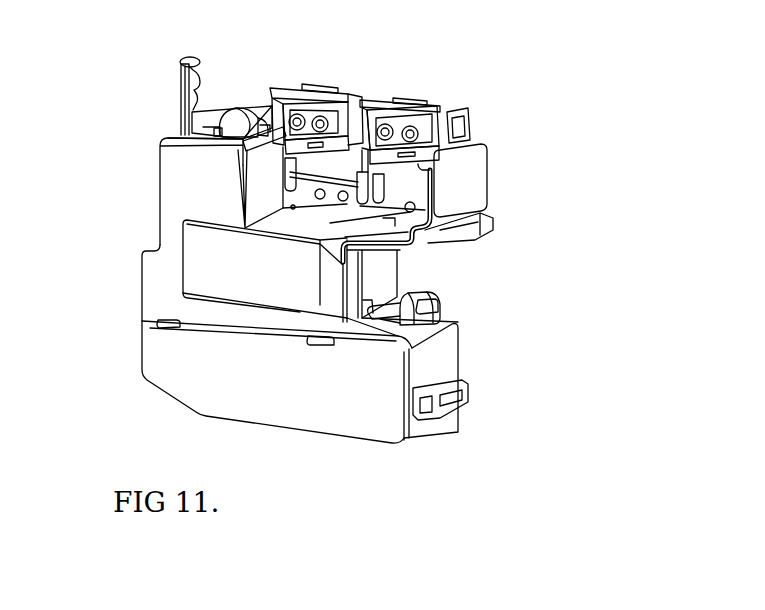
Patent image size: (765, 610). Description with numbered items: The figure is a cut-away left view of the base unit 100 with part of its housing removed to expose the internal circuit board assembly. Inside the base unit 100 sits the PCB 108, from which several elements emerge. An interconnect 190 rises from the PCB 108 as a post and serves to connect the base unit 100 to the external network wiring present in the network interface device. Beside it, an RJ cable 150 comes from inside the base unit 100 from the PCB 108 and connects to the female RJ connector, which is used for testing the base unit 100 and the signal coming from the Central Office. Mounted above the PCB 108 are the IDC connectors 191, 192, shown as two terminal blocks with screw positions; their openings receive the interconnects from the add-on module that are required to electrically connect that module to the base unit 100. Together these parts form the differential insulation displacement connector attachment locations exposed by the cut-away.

The base unit 100 is at (162, 397).
The PCB 108 is at (322, 207).
The RJ cable 150 is at (237, 103).
The interconnect 190 is at (180, 70).
The IDC connector 191 is at (330, 85).
The IDC connector 192 is at (413, 93).